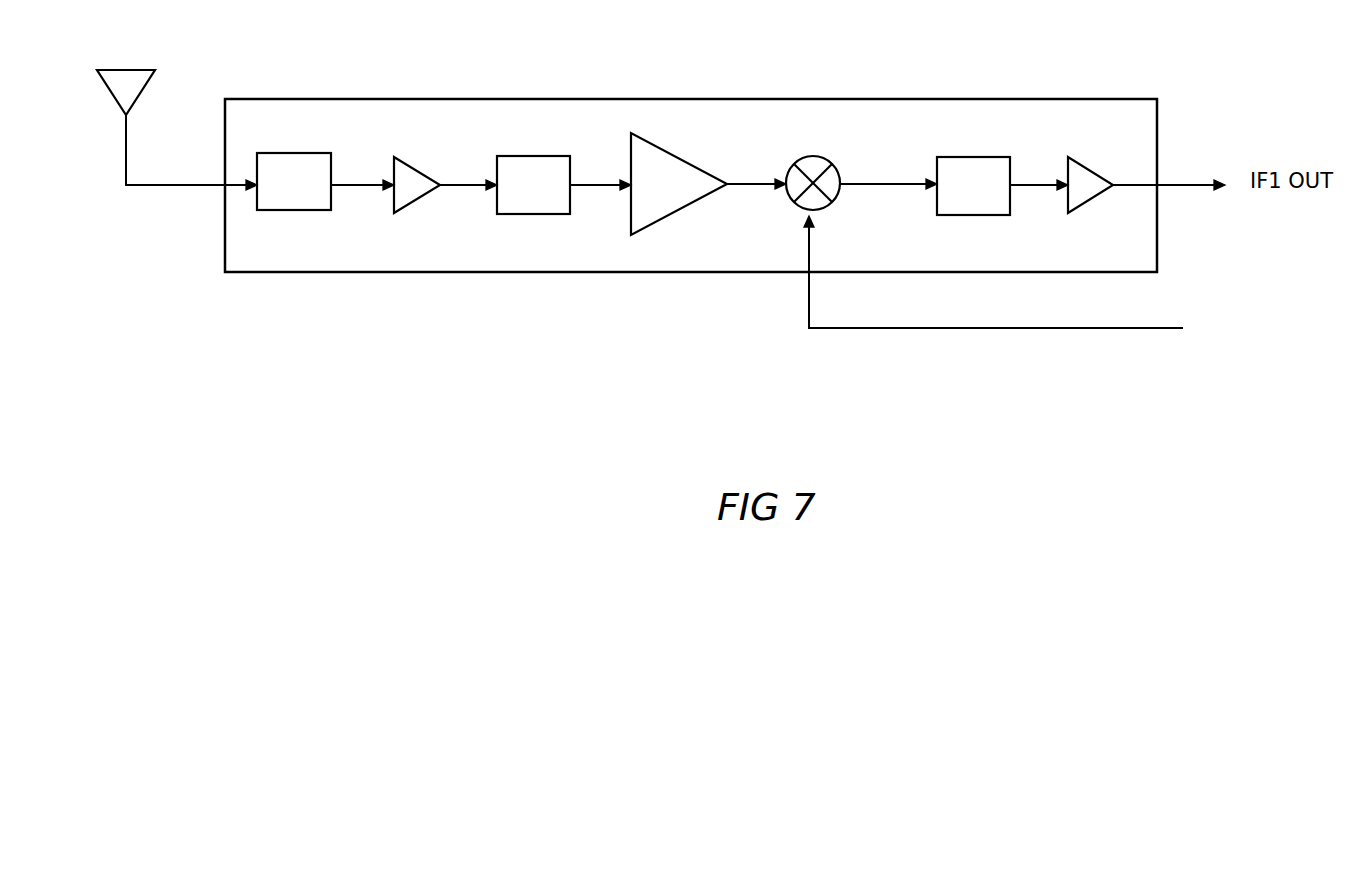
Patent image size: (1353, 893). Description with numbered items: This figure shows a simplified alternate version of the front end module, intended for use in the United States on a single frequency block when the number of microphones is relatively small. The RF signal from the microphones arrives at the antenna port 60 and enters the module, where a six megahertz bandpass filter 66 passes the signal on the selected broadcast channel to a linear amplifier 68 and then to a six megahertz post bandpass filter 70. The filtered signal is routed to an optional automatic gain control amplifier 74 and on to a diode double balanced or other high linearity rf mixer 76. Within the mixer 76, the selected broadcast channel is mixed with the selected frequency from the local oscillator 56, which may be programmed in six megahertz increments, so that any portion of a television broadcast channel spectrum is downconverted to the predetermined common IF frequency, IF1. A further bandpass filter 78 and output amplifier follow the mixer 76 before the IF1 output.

The local oscillator 56 is at (1148, 328).
The antenna port 60 is at (160, 185).
The bandpass filter 66 is at (297, 153).
The linear amplifier 68 is at (427, 172).
The post bandpass filter 70 is at (550, 156).
The automatic gain control amplifier 74 is at (655, 143).
The rf mixer 76 is at (828, 152).
The band pass filter 78 is at (965, 157).